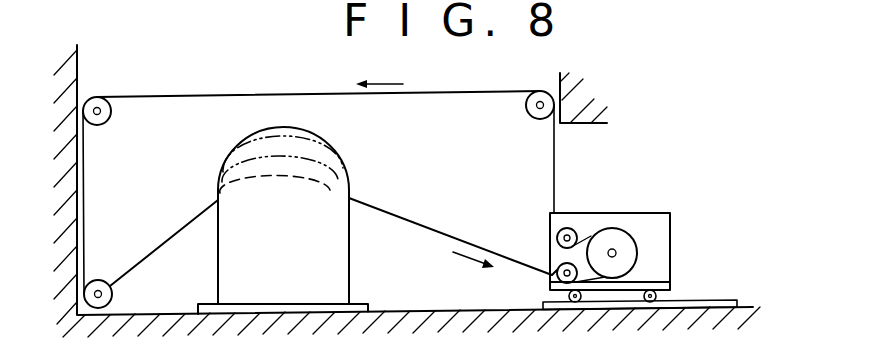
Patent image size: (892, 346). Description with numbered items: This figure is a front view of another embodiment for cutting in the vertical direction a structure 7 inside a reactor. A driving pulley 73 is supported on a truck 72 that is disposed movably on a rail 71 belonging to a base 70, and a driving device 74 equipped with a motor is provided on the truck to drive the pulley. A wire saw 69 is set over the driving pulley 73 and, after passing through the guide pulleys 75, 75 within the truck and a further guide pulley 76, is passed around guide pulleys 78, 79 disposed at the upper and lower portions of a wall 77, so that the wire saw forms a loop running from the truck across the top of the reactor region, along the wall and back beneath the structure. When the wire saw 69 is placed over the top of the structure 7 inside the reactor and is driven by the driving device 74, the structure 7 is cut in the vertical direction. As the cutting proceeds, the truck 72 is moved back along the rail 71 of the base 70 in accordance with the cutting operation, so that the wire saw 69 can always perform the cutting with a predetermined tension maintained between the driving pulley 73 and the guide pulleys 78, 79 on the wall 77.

The structure inside the reactor 7 is at (367, 184).
The wire saw 69 is at (440, 232).
The base 70 is at (737, 315).
The rail 71 is at (728, 301).
The truck 72 is at (668, 282).
The driving pulley 73 is at (624, 236).
The driving device 74 is at (672, 230).
The guide pulley 75 is at (571, 229).
The guide pulley 76 is at (530, 113).
The wall 77 is at (73, 75).
The guide pulley 78 is at (108, 117).
The guide pulley 79 is at (100, 280).